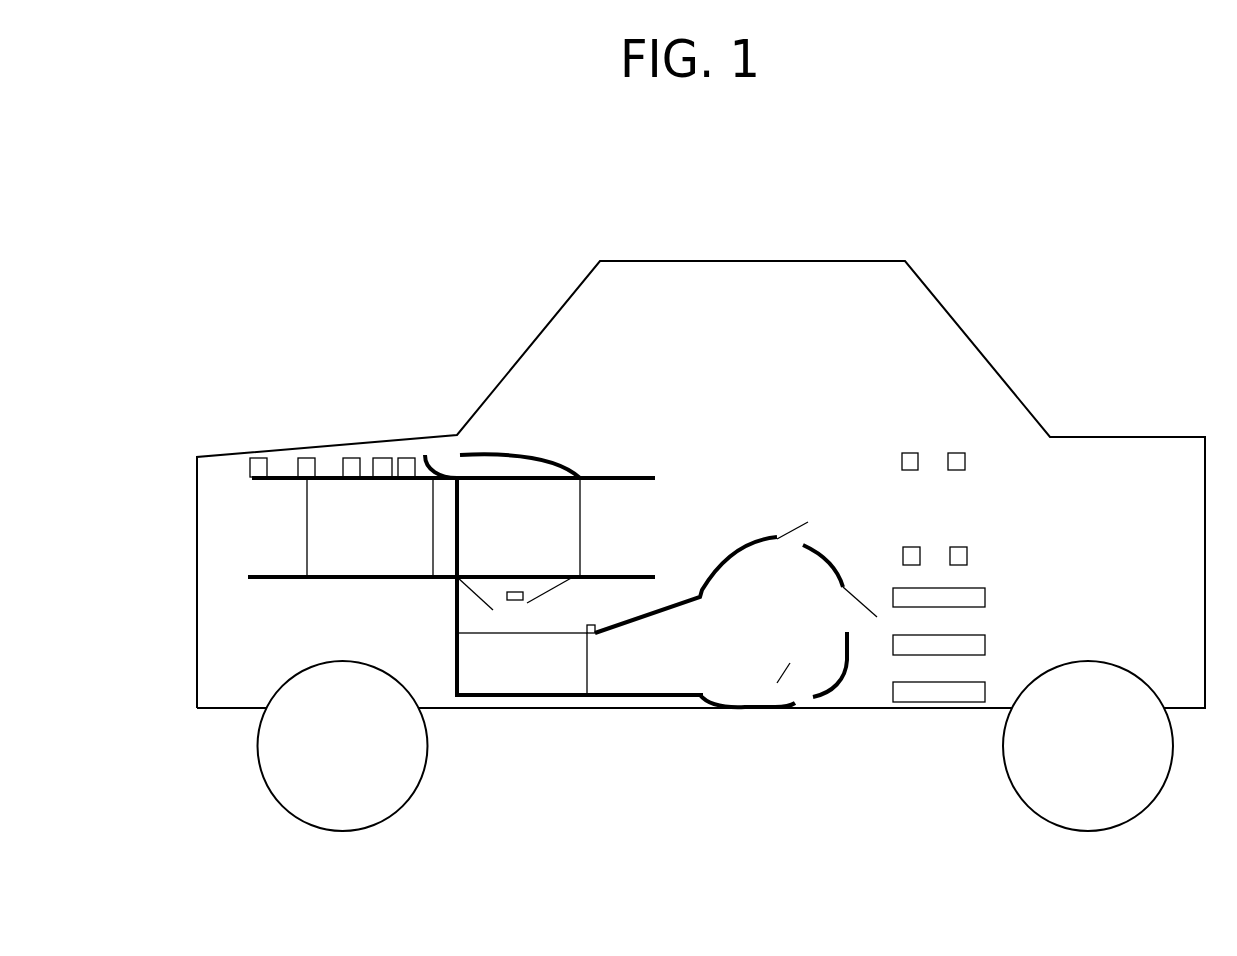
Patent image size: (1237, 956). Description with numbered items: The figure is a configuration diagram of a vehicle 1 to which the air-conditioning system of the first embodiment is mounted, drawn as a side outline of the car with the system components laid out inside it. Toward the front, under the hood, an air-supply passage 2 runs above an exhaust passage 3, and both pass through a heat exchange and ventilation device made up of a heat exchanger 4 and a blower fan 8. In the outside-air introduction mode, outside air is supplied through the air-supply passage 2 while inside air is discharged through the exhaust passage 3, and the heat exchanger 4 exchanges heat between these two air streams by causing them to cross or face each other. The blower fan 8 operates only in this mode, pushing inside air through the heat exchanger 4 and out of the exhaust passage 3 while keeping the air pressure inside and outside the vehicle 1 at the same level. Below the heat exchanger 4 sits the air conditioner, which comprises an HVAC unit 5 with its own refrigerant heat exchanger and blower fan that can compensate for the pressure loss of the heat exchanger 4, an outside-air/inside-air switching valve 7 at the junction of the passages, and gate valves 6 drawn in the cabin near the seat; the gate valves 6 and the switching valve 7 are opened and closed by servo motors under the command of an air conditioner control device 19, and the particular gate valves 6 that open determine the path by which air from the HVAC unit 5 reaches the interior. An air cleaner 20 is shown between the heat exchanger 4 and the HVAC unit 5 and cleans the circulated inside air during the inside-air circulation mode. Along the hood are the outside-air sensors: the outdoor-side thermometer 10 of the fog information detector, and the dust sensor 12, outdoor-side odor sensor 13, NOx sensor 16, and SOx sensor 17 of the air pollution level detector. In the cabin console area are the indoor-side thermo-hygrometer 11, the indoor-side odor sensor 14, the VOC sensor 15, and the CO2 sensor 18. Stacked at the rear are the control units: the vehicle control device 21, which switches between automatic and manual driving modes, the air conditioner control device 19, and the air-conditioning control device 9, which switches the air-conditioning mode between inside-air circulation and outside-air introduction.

The vehicle 1 is at (742, 261).
The air-supply passage 2 is at (533, 456).
The exhaust passage 3 is at (638, 478).
The heat exchanger 4 is at (575, 512).
The HVAC unit 5 is at (590, 680).
The gate valve 6 is at (792, 528).
The outside-air/inside-air switching valve 7 is at (457, 604).
The blower fan 8 is at (323, 577).
The air-conditioning control device 9 is at (981, 682).
The outdoor-side thermometer 10 is at (258, 458).
The indoor-side thermo-hygrometer 11 is at (912, 453).
The dust sensor 12 is at (307, 458).
The outdoor-side odor sensor 13 is at (351, 458).
The indoor-side odor sensor 14 is at (957, 453).
The VOC sensor 15 is at (912, 547).
The NOx sensor 16 is at (382, 458).
The SOx sensor 17 is at (406, 458).
The CO2 sensor 18 is at (959, 547).
The air conditioner control device 19 is at (983, 635).
The air cleaner 20 is at (523, 598).
The vehicle control device 21 is at (976, 588).